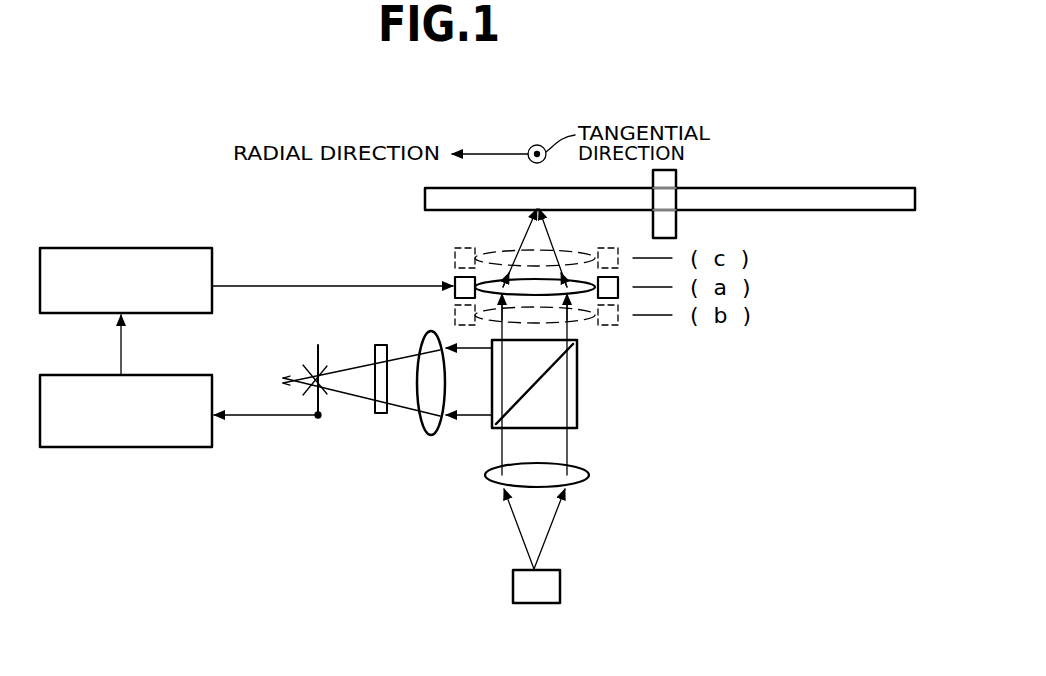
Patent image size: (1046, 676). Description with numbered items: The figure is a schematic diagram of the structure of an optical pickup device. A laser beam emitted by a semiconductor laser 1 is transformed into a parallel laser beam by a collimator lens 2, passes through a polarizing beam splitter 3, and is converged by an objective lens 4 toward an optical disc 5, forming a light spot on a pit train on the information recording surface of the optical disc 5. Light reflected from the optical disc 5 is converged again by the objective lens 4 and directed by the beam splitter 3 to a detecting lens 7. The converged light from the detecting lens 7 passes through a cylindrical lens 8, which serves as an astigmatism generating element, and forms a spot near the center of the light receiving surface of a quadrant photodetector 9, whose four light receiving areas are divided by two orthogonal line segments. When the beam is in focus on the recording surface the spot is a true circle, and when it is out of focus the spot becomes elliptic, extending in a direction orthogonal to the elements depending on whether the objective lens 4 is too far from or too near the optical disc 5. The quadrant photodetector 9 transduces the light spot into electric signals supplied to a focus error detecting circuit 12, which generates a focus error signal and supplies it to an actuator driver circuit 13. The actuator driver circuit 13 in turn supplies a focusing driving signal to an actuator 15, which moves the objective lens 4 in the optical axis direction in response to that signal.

The semiconductor laser 1 is at (560, 587).
The collimator lens 2 is at (588, 478).
The polarizing beam splitter 3 is at (578, 400).
The objective lens 4 is at (583, 295).
The optical disc 5 is at (862, 195).
The detecting lens 7 is at (432, 436).
The cylindrical lens 8 is at (380, 415).
The quadrant photodetector 9 is at (317, 420).
The focus error detecting circuit 12 is at (75, 451).
The actuator driver circuit 13 is at (176, 248).
The actuator 15 is at (455, 281).